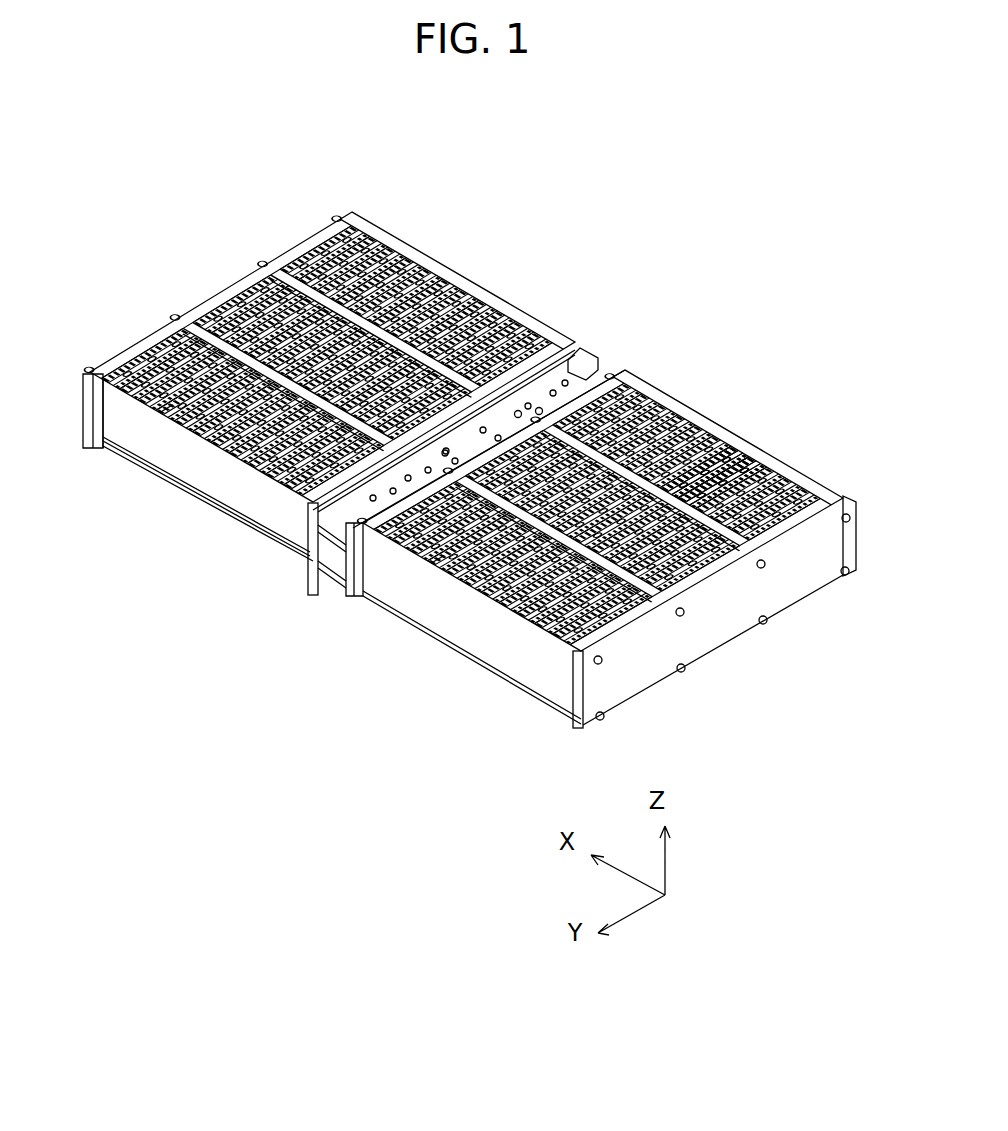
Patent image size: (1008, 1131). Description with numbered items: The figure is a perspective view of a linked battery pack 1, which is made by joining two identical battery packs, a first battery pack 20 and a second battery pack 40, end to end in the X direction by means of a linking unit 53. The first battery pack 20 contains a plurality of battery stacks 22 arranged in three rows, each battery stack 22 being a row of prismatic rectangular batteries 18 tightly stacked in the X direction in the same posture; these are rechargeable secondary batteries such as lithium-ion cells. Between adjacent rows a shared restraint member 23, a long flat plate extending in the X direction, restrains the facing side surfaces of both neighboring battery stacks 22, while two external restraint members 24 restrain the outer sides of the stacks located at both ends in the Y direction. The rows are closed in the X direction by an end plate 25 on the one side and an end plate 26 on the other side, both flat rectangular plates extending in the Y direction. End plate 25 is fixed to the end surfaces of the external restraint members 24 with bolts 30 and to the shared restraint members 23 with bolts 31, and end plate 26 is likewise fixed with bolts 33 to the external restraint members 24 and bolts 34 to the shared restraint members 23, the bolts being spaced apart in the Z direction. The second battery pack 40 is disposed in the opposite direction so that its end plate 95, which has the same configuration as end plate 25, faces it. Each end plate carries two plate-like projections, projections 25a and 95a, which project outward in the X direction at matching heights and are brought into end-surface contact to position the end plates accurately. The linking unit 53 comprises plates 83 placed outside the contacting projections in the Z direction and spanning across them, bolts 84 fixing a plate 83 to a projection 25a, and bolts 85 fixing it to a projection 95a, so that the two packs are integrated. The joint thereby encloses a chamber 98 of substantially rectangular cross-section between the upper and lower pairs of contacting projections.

The linked battery pack 1 is at (575, 228).
The rectangular battery 18 is at (723, 443).
The first battery pack 20 is at (718, 409).
The battery stack 22 is at (437, 550).
The shared restraint member 23 is at (708, 477).
The external restraint member 24 is at (557, 630).
The end plate on the one side 25 is at (582, 366).
The projection 25a is at (323, 573).
The end plate on the other side 26 is at (783, 527).
The bolt 30 is at (293, 492).
The bolt 31 is at (308, 488).
The bolt 33 is at (592, 655).
The bolt 34 is at (675, 606).
The second battery pack 40 is at (428, 242).
The linking unit 53 is at (567, 365).
The plate 83 is at (510, 403).
The bolt 84 is at (530, 400).
The bolt 85 is at (437, 443).
The end plate on the other side 95 is at (300, 395).
The projection 95a is at (317, 568).
The chamber 98 is at (303, 563).